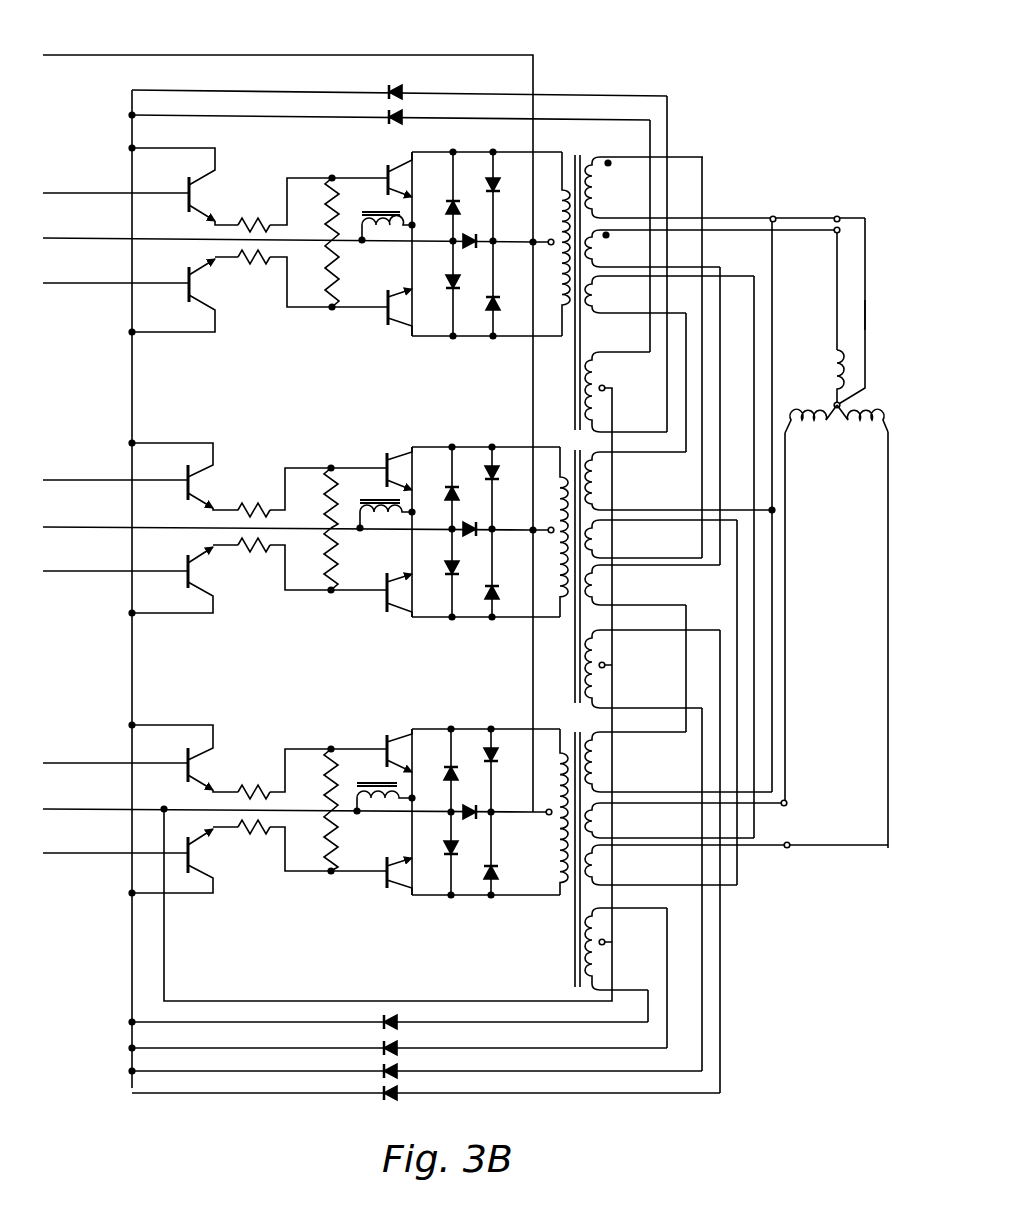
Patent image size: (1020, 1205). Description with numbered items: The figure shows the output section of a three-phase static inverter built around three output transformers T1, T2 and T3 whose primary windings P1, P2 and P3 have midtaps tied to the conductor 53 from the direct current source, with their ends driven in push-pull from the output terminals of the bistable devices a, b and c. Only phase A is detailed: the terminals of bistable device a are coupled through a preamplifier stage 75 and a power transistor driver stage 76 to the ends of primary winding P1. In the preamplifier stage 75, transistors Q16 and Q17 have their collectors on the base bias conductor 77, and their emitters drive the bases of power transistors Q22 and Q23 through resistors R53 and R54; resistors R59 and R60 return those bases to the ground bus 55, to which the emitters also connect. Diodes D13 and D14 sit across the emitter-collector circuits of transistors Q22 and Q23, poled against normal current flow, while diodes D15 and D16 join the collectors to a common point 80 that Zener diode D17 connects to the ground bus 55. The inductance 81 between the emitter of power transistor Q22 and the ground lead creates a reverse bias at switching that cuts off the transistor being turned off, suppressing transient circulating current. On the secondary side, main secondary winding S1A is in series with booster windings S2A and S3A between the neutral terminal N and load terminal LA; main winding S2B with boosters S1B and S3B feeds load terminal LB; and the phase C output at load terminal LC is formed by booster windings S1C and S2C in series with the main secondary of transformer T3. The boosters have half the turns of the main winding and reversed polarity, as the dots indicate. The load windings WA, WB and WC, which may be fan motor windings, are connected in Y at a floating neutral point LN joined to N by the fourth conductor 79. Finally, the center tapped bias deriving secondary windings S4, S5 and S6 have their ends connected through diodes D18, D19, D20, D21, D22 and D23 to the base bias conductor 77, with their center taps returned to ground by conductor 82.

The conductor 53 is at (294, 55).
The base bias conductor 77 is at (132, 130).
The ground bus 55 is at (62, 242).
The preamplifier stage 75 is at (215, 240).
The power transistor driver stage 76 is at (425, 245).
The fourth conductor 79 is at (865, 321).
The common point 80 is at (496, 241).
The inductance 81 is at (370, 210).
The conductor 82 is at (614, 686).
The transistor Q16 is at (190, 180).
The transistor Q17 is at (186, 305).
The power transistor Q22 is at (386, 166).
The power transistor Q23 is at (386, 330).
The resistor R53 is at (255, 218).
The resistor R54 is at (255, 260).
The resistor R59 is at (324, 222).
The resistor R60 is at (342, 274).
The diode D13 is at (445, 205).
The diode D14 is at (445, 290).
The diode D15 is at (496, 180).
The diode D16 is at (496, 310).
The Zener diode D17 is at (480, 236).
The diode D18 is at (402, 90).
The diode D19 is at (402, 120).
The diode D20 is at (398, 1018).
The diode D21 is at (398, 1044).
The diode D22 is at (398, 1067).
The diode D23 is at (398, 1089).
The primary winding P1 is at (556, 210).
The primary winding P2 is at (556, 498).
The primary winding P3 is at (556, 860).
The output transformer T1 is at (574, 387).
The output transformer T2 is at (574, 664).
The output transformer T3 is at (574, 943).
The main secondary winding S1A is at (602, 182).
The secondary booster winding S1B is at (602, 293).
The secondary booster winding S1C is at (602, 247).
The secondary booster winding S2A is at (602, 536).
The main secondary winding S2B is at (602, 475).
The secondary booster winding S2C is at (602, 583).
The secondary booster winding S3A is at (602, 861).
The secondary booster winding S3B is at (602, 819).
The bias deriving secondary winding S4 is at (602, 364).
The bias deriving secondary winding S5 is at (602, 642).
The bias deriving secondary winding S6 is at (602, 920).
The neutral terminal N is at (837, 217).
The load terminal LA is at (790, 841).
The load terminal LB is at (788, 802).
The load terminal LC is at (830, 233).
The floating neutral point LN is at (834, 402).
The load winding WA is at (866, 412).
The load winding WB is at (812, 430).
The load winding WC is at (833, 361).
The bistable device a is at (70, 174).
The bistable device b is at (70, 462).
The bistable device c is at (70, 745).